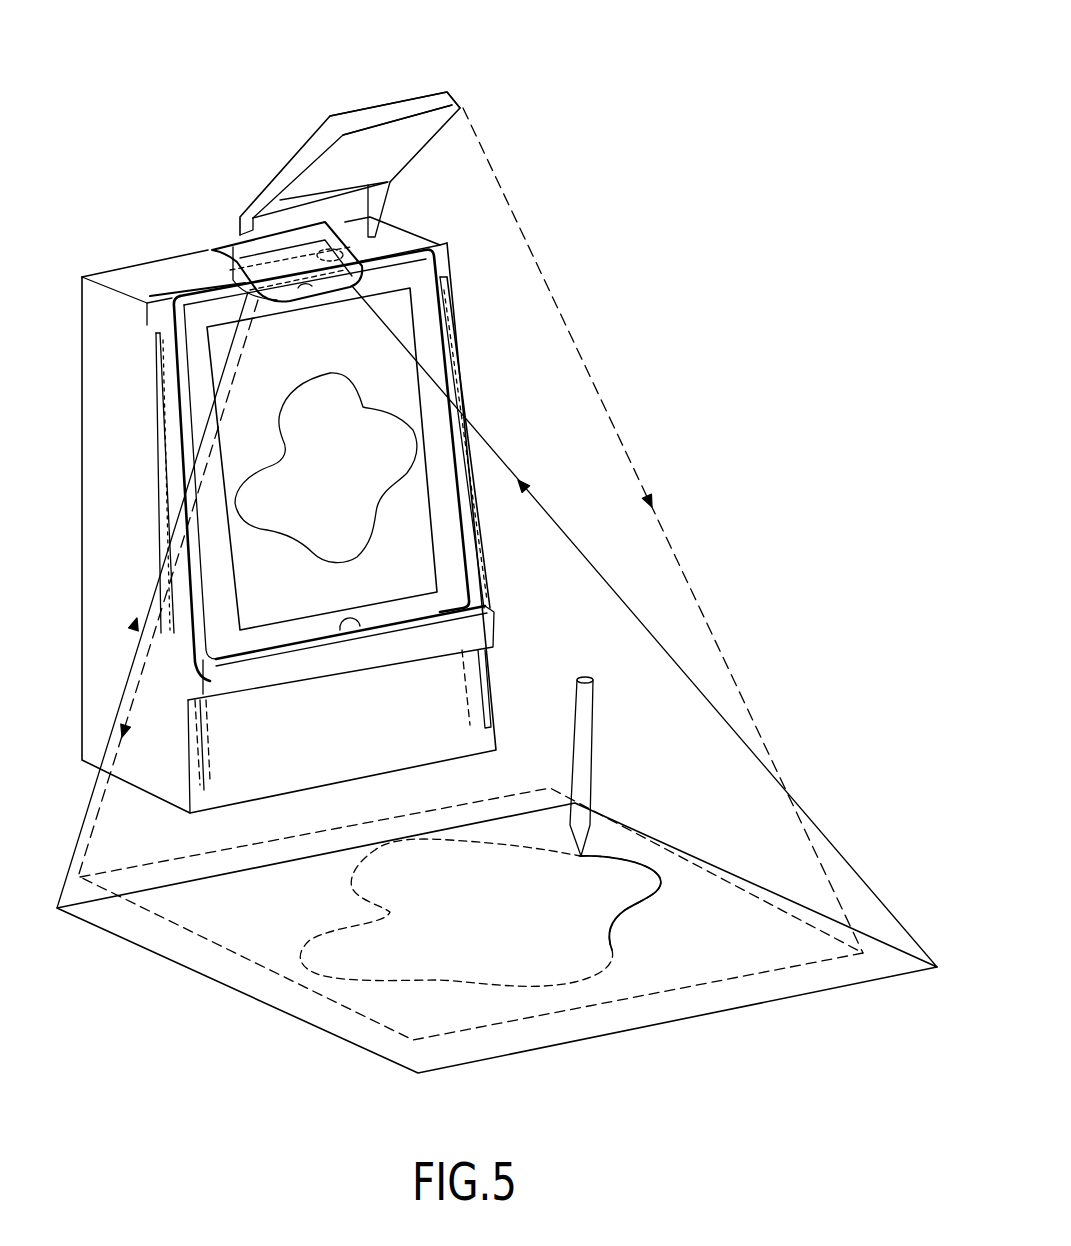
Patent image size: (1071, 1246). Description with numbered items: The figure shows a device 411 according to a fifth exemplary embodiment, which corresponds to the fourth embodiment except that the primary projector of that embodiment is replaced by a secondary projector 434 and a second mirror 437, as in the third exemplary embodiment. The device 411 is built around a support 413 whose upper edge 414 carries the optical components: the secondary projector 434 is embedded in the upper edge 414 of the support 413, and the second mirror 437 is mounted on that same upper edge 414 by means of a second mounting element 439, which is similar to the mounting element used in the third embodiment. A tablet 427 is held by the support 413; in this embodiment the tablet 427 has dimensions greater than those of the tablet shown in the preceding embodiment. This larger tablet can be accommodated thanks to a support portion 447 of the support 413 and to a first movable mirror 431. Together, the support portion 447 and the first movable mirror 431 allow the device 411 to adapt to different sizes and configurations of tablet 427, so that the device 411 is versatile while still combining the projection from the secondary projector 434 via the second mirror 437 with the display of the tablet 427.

The device 411 is at (623, 76).
The support 413 is at (100, 498).
The upper edge 414 is at (157, 275).
The tablet 427 is at (427, 343).
The first movable mirror 431 is at (175, 315).
The secondary projector 434 is at (388, 212).
The second mirror 437 is at (430, 127).
The second mounting element 439 is at (275, 155).
The support portion 447 is at (488, 628).